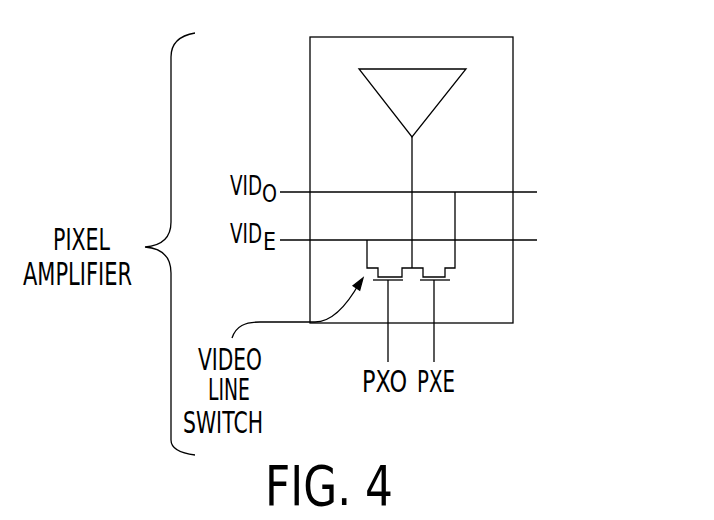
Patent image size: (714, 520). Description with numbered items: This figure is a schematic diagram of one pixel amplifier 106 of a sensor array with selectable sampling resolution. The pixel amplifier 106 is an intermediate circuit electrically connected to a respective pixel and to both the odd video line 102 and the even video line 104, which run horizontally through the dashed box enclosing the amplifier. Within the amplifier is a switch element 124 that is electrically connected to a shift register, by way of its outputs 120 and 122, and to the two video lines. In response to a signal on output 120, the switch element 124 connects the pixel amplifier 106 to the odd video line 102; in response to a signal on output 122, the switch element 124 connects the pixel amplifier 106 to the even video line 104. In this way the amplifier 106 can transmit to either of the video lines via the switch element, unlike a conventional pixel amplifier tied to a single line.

The odd video line 102 is at (298, 190).
The even video line 104 is at (523, 242).
The pixel amplifier 106 is at (562, 112).
The shift register output 120 is at (388, 342).
The shift register output 122 is at (434, 342).
The switch element 124 is at (463, 280).